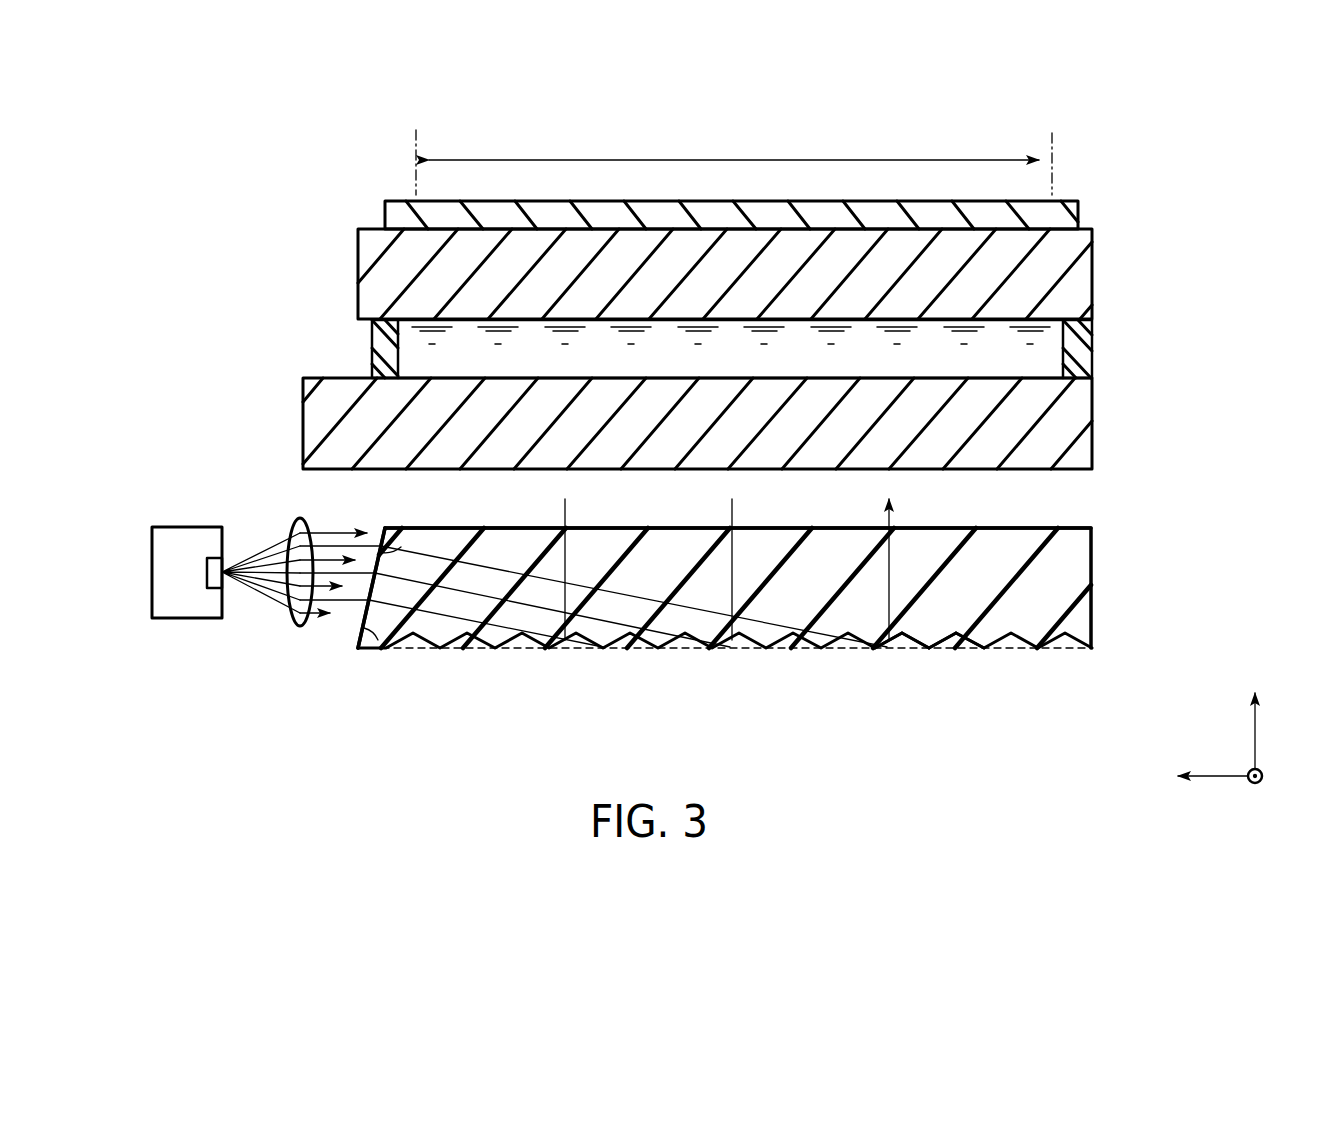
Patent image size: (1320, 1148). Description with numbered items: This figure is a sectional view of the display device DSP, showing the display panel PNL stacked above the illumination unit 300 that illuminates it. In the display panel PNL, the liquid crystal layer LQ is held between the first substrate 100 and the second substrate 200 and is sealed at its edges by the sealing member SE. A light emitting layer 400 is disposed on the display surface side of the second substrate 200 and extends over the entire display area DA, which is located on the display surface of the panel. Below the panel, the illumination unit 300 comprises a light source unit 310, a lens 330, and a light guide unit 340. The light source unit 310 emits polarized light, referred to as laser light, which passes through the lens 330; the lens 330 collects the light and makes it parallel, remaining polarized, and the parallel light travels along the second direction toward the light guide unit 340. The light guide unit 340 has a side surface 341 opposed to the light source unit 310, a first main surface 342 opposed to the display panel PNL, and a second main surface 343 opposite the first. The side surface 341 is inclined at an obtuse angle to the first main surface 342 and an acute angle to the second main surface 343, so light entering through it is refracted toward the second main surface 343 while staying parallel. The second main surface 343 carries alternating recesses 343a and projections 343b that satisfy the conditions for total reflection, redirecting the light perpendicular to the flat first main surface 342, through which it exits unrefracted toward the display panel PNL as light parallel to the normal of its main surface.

The first substrate 100 is at (293, 421).
The second substrate 200 is at (333, 268).
The light emitting layer 400 is at (333, 209).
The illumination unit 300 is at (150, 575).
The light source unit 310 is at (182, 619).
The lens 330 is at (298, 628).
The light guide unit 340 is at (1092, 588).
The side surface 341 is at (357, 629).
The first main surface 342 is at (1042, 527).
The second main surface 343 is at (1044, 653).
The recesses 343a is at (793, 697).
The projections 343b is at (927, 653).
The sealing member SE is at (371, 343).
The liquid crystal layer LQ is at (318, 352).
The display area DA is at (734, 161).
The display device DSP is at (1129, 164).
The display panel PNL is at (1132, 350).